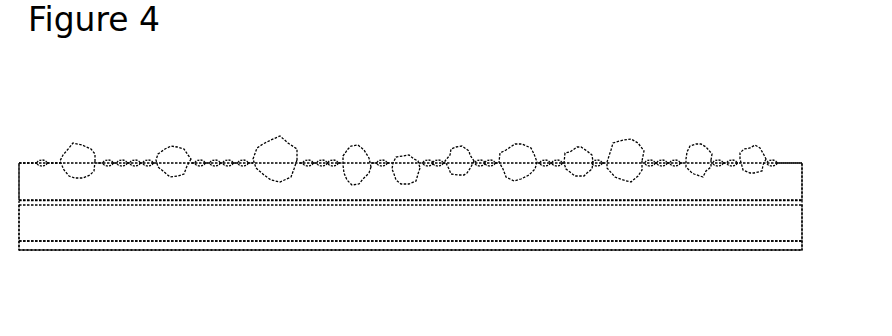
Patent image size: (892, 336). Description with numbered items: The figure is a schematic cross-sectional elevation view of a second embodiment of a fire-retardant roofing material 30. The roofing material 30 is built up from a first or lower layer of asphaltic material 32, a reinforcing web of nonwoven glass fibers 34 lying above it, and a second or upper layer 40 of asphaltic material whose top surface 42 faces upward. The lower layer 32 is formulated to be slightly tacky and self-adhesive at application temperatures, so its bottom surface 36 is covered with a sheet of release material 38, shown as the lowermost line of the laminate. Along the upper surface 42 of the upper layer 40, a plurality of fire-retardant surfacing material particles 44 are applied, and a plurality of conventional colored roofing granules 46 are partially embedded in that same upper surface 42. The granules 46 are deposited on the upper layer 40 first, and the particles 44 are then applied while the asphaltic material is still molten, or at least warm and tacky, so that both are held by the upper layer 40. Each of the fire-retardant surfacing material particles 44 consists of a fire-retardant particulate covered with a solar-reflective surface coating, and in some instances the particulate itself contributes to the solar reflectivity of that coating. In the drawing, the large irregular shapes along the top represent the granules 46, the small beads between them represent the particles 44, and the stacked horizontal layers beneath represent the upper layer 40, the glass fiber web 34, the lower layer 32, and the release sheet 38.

The fire-retardant roofing material 30 is at (610, 87).
The lower layer of asphaltic material 32 is at (323, 222).
The reinforcing web of nonwoven glass fibers 34 is at (452, 203).
The bottom surface 36 is at (553, 242).
The sheet of release material 38 is at (718, 243).
The upper layer of asphaltic material 40 is at (119, 182).
The top surface 42 is at (482, 162).
The fire-retardant surfacing material particles 44 is at (435, 162).
The colored roofing granules 46 is at (168, 155).